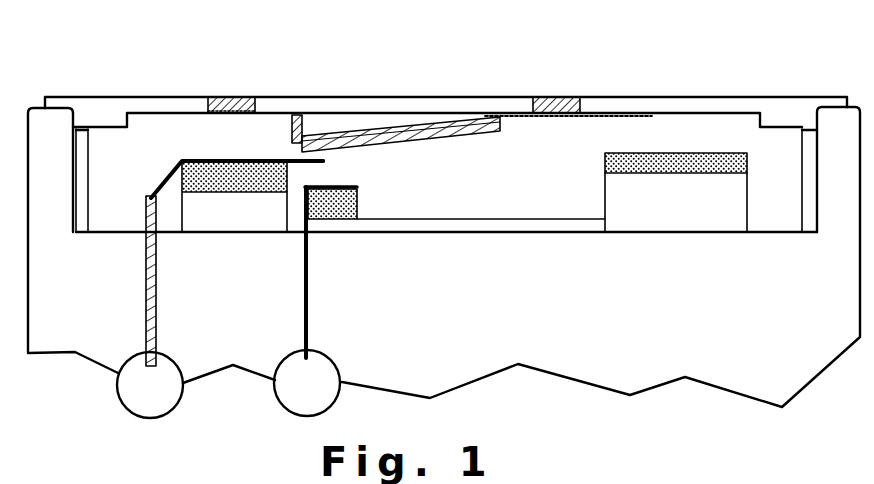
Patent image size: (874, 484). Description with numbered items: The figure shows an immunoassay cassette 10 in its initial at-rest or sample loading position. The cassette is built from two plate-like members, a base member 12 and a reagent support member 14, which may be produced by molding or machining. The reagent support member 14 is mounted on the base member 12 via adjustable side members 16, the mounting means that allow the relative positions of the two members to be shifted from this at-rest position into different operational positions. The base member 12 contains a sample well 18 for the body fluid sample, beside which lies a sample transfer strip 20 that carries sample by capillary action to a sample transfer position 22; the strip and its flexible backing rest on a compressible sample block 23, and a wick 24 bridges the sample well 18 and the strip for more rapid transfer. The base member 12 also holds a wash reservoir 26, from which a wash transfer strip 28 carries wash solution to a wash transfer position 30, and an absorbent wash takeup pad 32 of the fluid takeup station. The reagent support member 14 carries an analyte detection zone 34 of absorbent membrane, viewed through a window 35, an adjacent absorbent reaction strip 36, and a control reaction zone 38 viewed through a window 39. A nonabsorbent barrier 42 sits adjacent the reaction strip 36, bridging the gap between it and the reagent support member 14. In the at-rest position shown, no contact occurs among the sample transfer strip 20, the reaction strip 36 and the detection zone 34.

The immunoassay cassette 10 is at (108, 62).
The base member 12 is at (767, 237).
The reagent support member 14 is at (778, 95).
The adjustable side members 16 is at (83, 222).
The sample well 18 is at (136, 399).
The sample transfer strip 20 is at (181, 160).
The sample transfer position 22 is at (324, 162).
The sample block 23 is at (213, 168).
The wick 24 is at (157, 246).
The wash reservoir 26 is at (293, 397).
The wash transfer strip 28 is at (310, 254).
The wash transfer position 30 is at (358, 186).
The absorbent wash takeup pad 32 is at (662, 153).
The analyte detection zone 34 is at (558, 117).
The window 35 is at (555, 96).
The reaction strip 36 is at (437, 134).
The control reaction zone 38 is at (223, 113).
The window 39 is at (227, 96).
The nonabsorbent barrier 42 is at (294, 115).